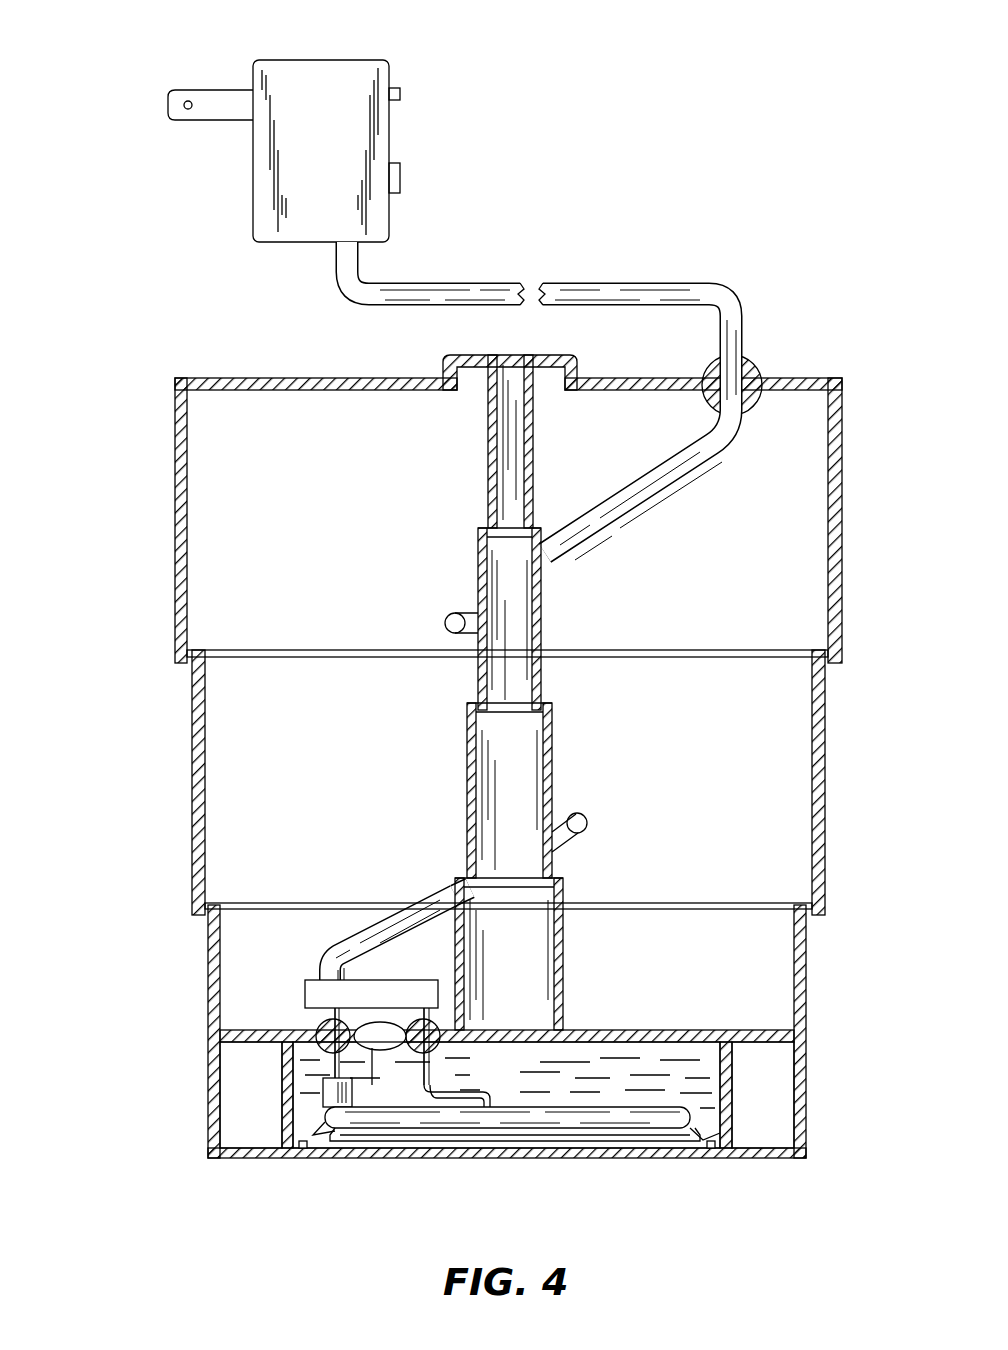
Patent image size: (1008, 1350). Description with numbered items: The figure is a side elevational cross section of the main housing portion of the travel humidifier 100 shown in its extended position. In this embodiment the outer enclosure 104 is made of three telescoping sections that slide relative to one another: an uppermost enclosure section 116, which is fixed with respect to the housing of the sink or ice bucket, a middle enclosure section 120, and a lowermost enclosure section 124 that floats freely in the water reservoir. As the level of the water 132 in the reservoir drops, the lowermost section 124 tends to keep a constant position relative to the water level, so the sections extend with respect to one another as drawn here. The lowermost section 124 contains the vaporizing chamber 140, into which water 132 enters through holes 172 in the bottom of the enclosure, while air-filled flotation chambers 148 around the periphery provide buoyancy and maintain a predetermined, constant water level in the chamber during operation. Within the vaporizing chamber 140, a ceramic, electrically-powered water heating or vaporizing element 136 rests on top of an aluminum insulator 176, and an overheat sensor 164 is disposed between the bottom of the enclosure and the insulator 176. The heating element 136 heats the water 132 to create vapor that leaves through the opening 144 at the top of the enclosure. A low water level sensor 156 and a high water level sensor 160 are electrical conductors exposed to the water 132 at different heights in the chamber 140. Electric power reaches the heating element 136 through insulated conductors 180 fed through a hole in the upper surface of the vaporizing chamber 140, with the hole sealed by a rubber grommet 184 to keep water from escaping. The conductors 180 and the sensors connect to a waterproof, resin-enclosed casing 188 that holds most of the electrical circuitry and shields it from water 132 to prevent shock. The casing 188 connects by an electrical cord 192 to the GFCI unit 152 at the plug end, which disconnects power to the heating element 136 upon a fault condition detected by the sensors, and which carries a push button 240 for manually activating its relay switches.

The travel humidifier 100 is at (166, 345).
The outer enclosure 104 is at (833, 373).
The uppermost enclosure section 116 is at (176, 522).
The enclosure section 120 is at (192, 790).
The lowermost enclosure section 124 is at (208, 1020).
The water 132 is at (635, 1082).
The water heating or vaporizing element 136 is at (598, 1120).
The vaporizing chamber 140 is at (674, 1052).
The opening 144 is at (512, 362).
The flotation chambers 148 is at (251, 1158).
The GFCI unit 152 is at (345, 68).
The low water level sensor 156 is at (372, 1062).
The high water level sensor 160 is at (530, 1064).
The overheat sensor 164 is at (510, 1142).
The holes 172 is at (303, 1158).
The aluminum insulator 176 is at (700, 1140).
The insulated conductors 180 is at (326, 1094).
The rubber grommet 184 is at (412, 1028).
The resin-enclosed casing 188 is at (393, 985).
The electrical cord 192 is at (642, 503).
The push button 240 is at (401, 181).